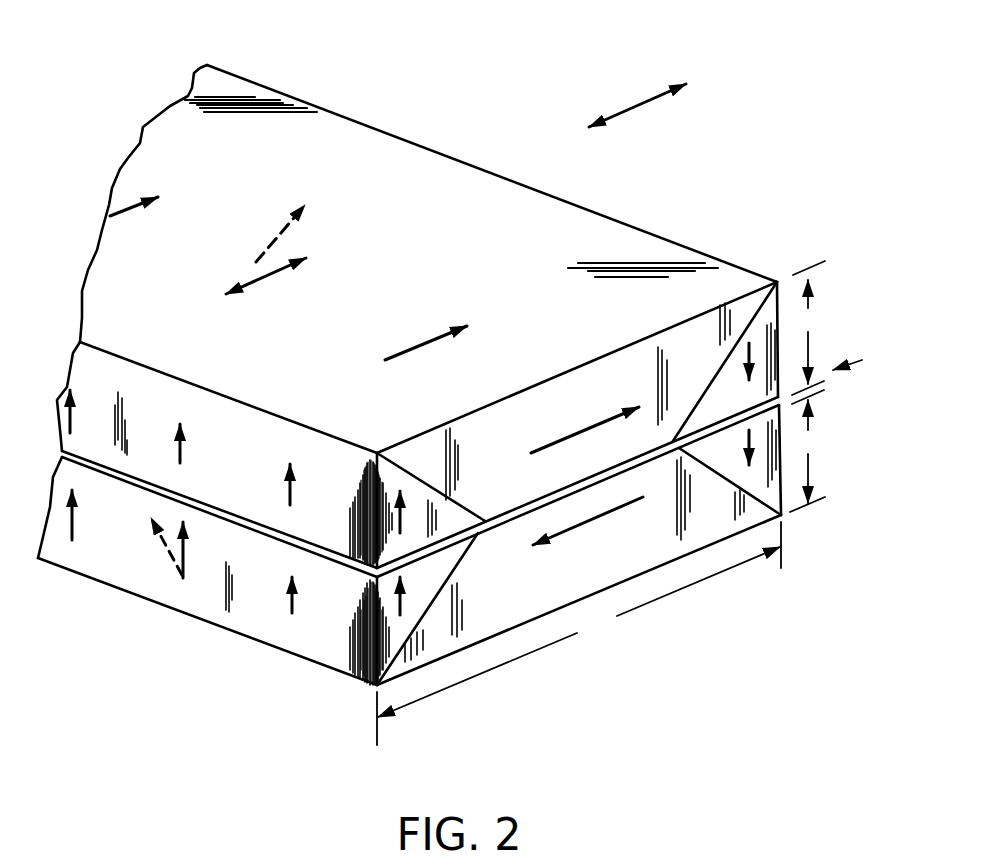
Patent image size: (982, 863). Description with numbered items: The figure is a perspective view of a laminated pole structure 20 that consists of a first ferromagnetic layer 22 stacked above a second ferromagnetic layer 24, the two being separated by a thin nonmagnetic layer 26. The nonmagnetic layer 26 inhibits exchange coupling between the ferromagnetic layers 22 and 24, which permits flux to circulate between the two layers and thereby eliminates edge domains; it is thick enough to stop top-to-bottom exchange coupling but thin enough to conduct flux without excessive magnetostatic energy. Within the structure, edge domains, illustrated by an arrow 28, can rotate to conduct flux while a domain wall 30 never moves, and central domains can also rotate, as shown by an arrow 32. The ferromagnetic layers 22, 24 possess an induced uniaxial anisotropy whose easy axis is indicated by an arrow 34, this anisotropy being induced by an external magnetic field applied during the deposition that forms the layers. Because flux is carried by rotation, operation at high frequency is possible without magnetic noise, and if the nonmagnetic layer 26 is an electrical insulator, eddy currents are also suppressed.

The laminated pole structure 20 is at (393, 78).
The first ferromagnetic layer 22 is at (485, 172).
The second ferromagnetic layer 24 is at (123, 579).
The nonmagnetic layer 26 is at (339, 557).
The arrow (edge domain) 28 is at (162, 538).
The domain wall 30 is at (469, 549).
The arrow (central domain rotation) 32 is at (253, 271).
The arrow (easy axis) 34 is at (633, 104).